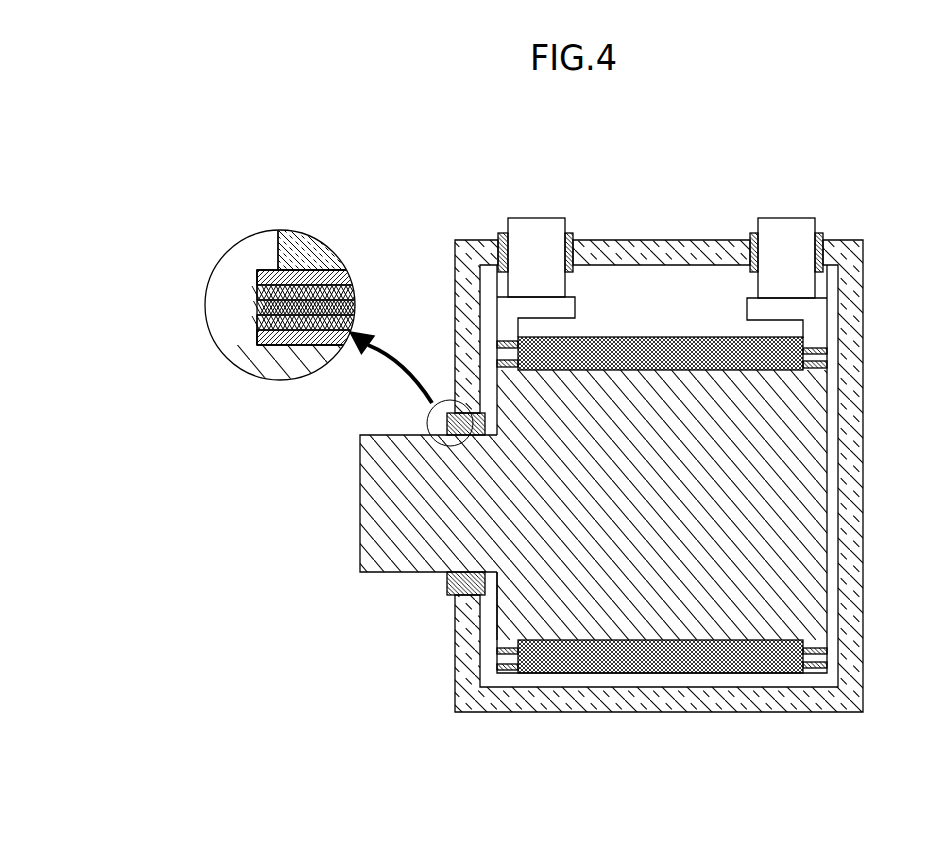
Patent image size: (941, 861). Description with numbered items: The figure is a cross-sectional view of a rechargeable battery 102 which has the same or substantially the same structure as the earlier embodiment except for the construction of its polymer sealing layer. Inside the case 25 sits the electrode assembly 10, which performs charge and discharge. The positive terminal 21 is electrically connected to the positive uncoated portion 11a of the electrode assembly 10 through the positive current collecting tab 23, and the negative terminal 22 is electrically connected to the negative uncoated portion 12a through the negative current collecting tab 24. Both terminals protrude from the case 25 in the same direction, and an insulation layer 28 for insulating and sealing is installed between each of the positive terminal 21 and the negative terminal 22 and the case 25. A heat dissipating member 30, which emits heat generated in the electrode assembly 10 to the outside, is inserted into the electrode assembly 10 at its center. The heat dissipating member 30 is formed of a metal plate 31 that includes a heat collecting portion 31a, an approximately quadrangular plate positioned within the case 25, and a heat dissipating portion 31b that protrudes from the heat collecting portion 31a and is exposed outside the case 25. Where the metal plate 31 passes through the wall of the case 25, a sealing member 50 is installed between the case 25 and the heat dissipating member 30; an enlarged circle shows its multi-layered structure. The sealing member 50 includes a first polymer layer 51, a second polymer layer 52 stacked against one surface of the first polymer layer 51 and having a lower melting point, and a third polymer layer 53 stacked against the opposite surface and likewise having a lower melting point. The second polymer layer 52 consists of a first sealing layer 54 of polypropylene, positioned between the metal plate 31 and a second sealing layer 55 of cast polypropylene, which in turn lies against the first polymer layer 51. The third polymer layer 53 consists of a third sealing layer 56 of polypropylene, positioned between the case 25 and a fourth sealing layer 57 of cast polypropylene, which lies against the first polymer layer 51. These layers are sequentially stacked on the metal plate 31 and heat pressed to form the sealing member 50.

The rechargeable battery 102 is at (649, 115).
The electrode assembly 10 is at (686, 326).
The positive uncoated portion 11a is at (510, 344).
The negative uncoated portion 12a is at (815, 350).
The positive terminal 21 is at (538, 228).
The negative terminal 22 is at (778, 228).
The positive current collecting tab 23 is at (540, 302).
The negative current collecting tab 24 is at (798, 308).
The case 25 is at (845, 375).
The insulation layer 28 is at (569, 233).
The heat dissipating member 30 is at (637, 642).
The metal plate 31 is at (295, 532).
The heat collecting portion 31a is at (518, 605).
The heat dissipating portion 31b is at (376, 553).
The sealing member 50 is at (426, 420).
The first polymer layer 51 is at (258, 307).
The second polymer layer 52 is at (152, 285).
The third polymer layer 53 is at (152, 200).
The first sealing layer 54 is at (258, 340).
The second sealing layer 55 is at (258, 322).
The third sealing layer 56 is at (258, 277).
The fourth sealing layer 57 is at (258, 292).